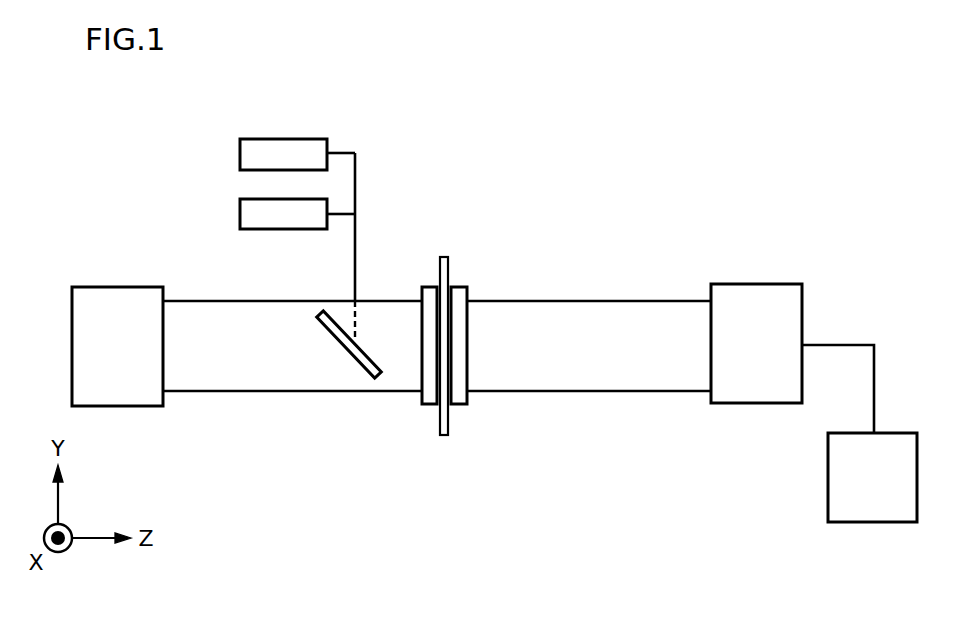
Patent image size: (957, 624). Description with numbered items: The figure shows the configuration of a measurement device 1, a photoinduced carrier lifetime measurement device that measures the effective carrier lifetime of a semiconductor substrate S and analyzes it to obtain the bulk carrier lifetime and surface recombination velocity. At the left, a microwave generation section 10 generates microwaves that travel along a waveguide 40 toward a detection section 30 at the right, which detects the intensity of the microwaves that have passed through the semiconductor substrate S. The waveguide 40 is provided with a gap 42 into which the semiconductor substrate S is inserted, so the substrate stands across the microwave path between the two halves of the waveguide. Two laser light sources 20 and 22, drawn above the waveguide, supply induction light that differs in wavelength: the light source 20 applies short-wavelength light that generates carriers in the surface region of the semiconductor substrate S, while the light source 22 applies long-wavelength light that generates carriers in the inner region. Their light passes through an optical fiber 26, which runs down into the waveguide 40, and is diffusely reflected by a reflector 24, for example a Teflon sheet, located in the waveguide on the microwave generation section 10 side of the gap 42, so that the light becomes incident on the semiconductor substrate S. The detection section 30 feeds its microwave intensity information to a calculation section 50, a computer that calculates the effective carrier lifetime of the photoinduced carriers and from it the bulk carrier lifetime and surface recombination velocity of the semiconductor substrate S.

The measurement device 1 is at (700, 150).
The microwave generation section 10 is at (107, 287).
The light source 20 is at (240, 151).
The light source 22 is at (240, 210).
The reflector 24 is at (352, 357).
The optical fiber 26 is at (355, 272).
The detection section 30 is at (760, 284).
The waveguide 40 is at (240, 391).
The gap 42 is at (453, 411).
The calculation section 50 is at (905, 433).
The semiconductor substrate S is at (444, 257).